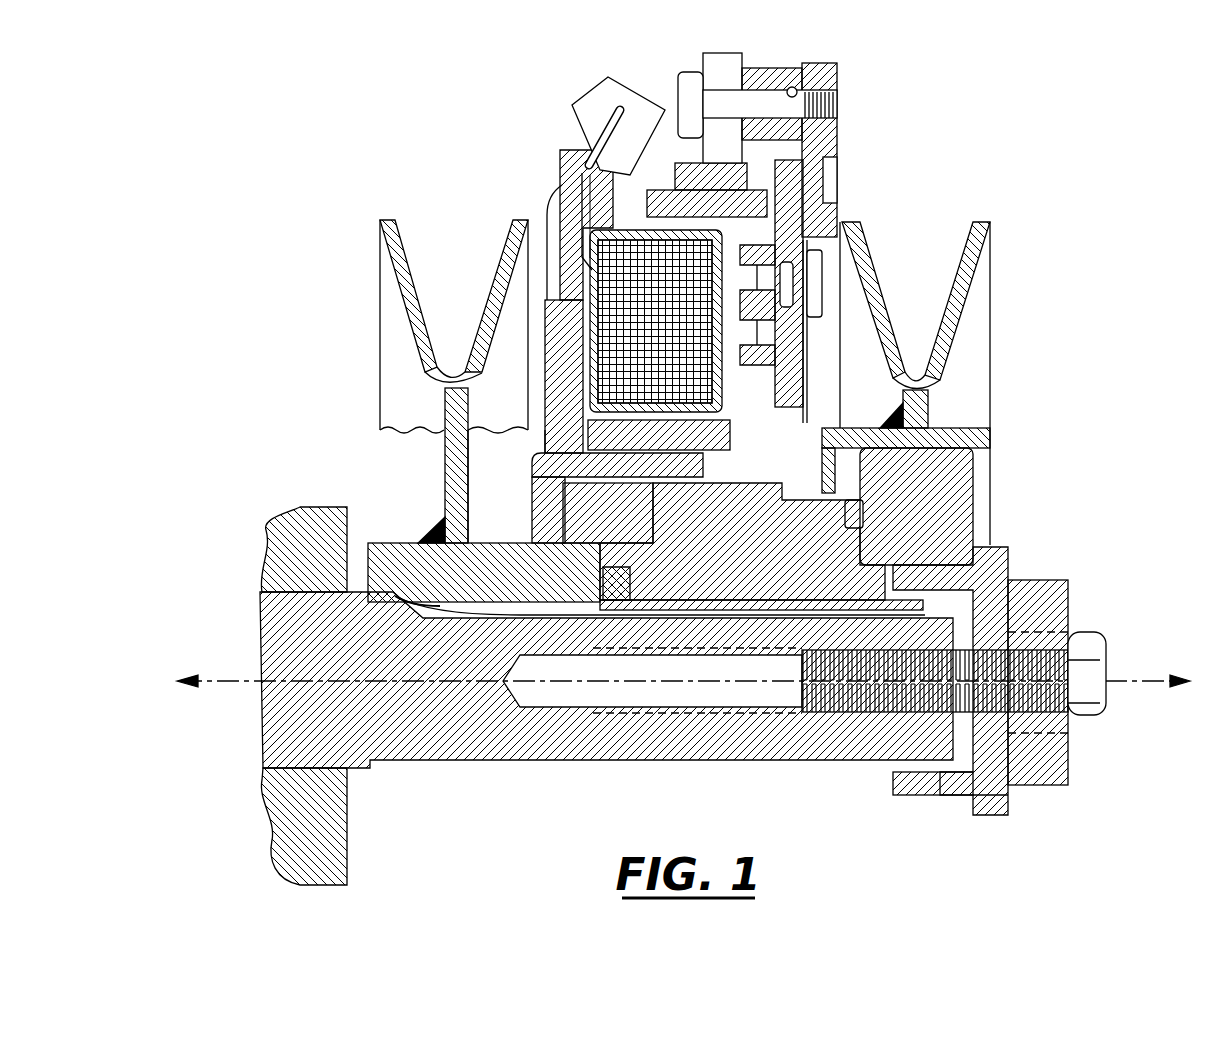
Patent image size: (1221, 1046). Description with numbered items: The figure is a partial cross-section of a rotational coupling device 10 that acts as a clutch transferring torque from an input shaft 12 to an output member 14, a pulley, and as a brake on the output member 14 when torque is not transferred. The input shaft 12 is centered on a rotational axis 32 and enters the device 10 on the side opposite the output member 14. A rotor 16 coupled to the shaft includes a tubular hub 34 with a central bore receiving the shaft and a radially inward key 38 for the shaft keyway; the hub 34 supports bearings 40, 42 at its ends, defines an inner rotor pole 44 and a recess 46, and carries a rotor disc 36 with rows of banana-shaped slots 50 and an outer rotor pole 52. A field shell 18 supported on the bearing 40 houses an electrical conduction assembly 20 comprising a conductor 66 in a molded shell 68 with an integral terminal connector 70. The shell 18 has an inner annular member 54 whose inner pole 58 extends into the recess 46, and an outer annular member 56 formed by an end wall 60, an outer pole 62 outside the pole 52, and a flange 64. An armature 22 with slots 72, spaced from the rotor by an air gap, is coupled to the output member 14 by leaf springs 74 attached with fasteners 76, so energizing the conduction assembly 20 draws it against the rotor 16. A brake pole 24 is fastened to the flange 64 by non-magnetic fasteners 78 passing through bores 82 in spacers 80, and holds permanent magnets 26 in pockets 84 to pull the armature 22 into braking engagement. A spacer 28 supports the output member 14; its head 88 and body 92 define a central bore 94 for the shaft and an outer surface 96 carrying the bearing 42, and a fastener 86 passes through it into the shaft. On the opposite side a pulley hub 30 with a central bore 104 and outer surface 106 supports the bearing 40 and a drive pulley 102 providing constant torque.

The rotational coupling device 10 is at (378, 155).
The input shaft 12 is at (445, 747).
The output member 14 is at (975, 388).
The rotor 16 is at (843, 570).
The field shell 18 is at (522, 451).
The electrical conduction assembly 20 is at (590, 262).
The armature 22 is at (900, 375).
The brake pole 24 is at (837, 70).
The permanent magnets 26 is at (808, 245).
The spacer 28 is at (1036, 566).
The pulley hub 30 is at (378, 543).
The rotational axis 32 is at (212, 672).
The hub 34 is at (672, 620).
The rotor disc 36 is at (790, 240).
The key 38 is at (760, 620).
The bearing 40 is at (580, 523).
The bearing 42 is at (963, 498).
The inner rotor pole 44 is at (610, 435).
The recess 46 is at (762, 495).
The slots 50 is at (795, 282).
The outer rotor pole 52 is at (580, 153).
The inner annular member 54 is at (590, 504).
The outer annular member 56 is at (555, 378).
The inner pole 58 is at (588, 466).
The end wall 60 is at (556, 330).
The outer pole 62 is at (690, 170).
The flange 64 is at (718, 72).
The conductor 66 is at (613, 303).
The shell 68 is at (657, 233).
The terminal connector 70 is at (605, 117).
The slots 72 is at (812, 335).
The leaf springs 74 is at (900, 400).
The fasteners 76 is at (865, 492).
The fasteners 78 is at (687, 82).
The spacers 80 is at (758, 72).
The bores 82 is at (792, 92).
The pockets 84 is at (835, 180).
The fastener 86 is at (1090, 723).
The head 88 is at (1058, 780).
The body 92 is at (1000, 805).
The central bore 94 is at (968, 760).
The outer surface 96 is at (950, 580).
The drive pulley 102 is at (390, 298).
The central bore 104 is at (398, 597).
The outer surface 106 is at (583, 565).